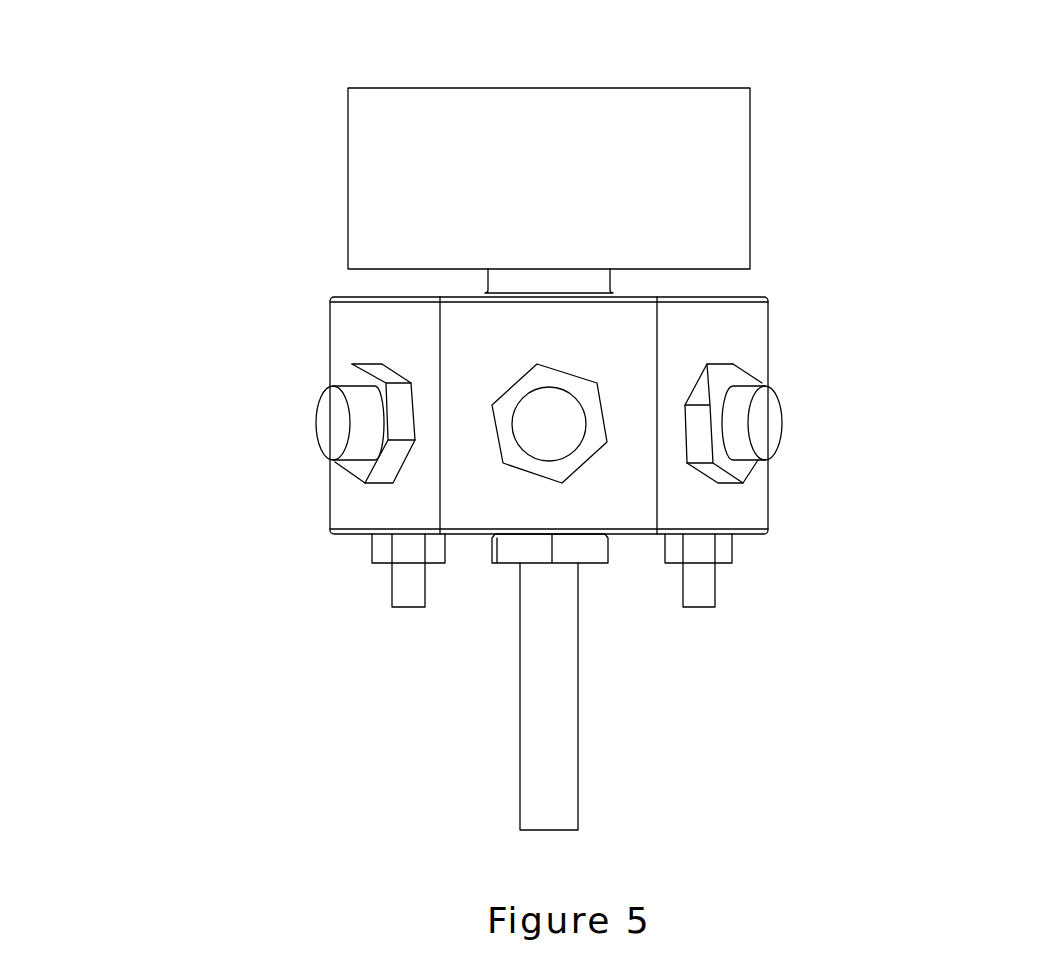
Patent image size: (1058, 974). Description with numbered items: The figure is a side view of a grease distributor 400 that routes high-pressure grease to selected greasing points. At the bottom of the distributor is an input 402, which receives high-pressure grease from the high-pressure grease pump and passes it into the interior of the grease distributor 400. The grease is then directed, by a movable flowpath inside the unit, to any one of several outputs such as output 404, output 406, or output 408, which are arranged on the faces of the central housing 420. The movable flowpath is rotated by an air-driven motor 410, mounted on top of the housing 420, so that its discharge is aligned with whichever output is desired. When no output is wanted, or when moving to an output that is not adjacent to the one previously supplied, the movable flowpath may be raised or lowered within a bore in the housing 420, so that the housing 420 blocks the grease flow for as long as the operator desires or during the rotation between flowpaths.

The grease distributor 400 is at (183, 253).
The input 402 is at (535, 672).
The output 404 is at (337, 425).
The output 406 is at (557, 427).
The output 408 is at (768, 432).
The air-driven motor 410 is at (392, 132).
The housing 420 is at (475, 507).